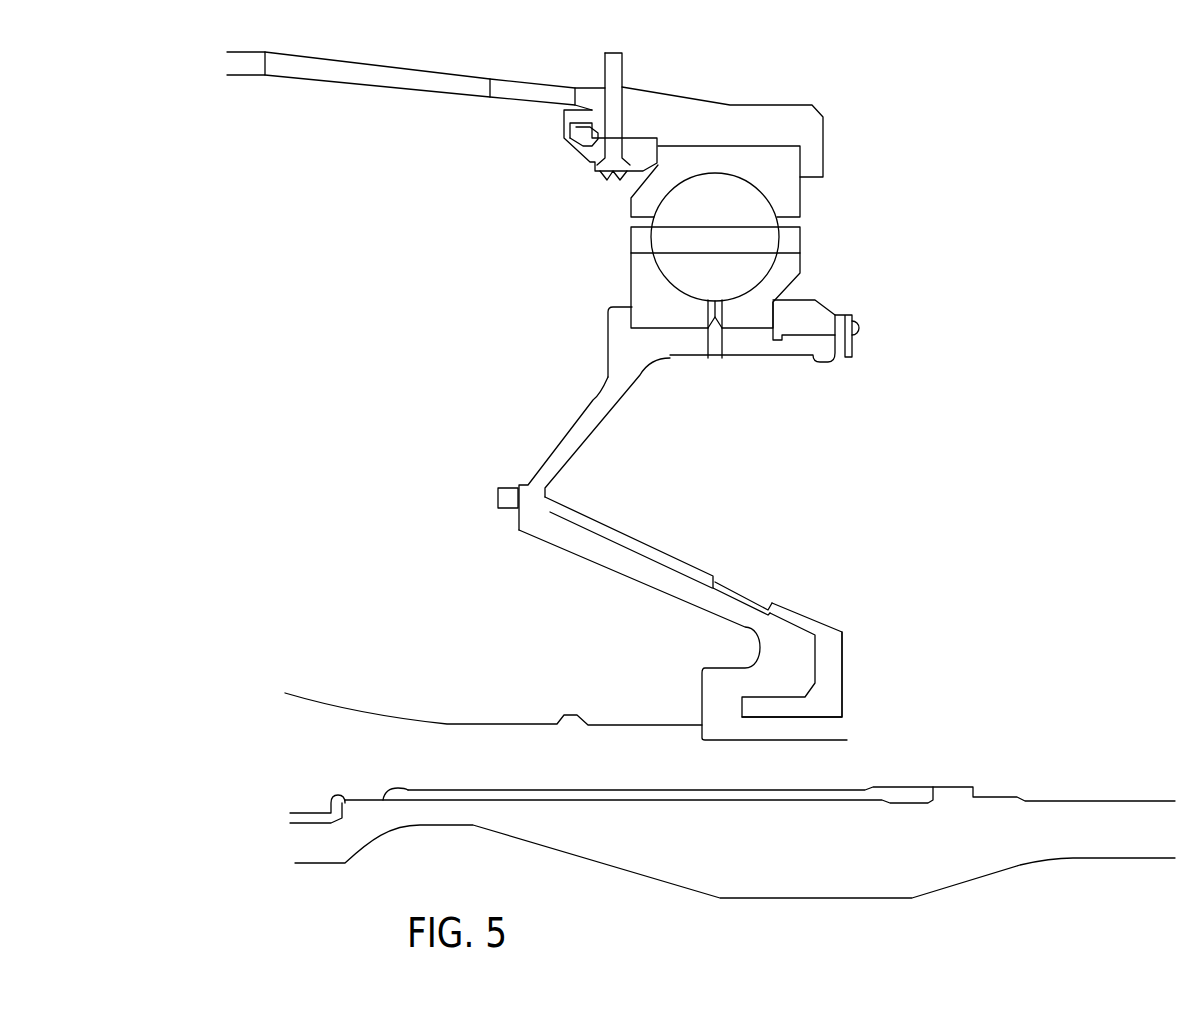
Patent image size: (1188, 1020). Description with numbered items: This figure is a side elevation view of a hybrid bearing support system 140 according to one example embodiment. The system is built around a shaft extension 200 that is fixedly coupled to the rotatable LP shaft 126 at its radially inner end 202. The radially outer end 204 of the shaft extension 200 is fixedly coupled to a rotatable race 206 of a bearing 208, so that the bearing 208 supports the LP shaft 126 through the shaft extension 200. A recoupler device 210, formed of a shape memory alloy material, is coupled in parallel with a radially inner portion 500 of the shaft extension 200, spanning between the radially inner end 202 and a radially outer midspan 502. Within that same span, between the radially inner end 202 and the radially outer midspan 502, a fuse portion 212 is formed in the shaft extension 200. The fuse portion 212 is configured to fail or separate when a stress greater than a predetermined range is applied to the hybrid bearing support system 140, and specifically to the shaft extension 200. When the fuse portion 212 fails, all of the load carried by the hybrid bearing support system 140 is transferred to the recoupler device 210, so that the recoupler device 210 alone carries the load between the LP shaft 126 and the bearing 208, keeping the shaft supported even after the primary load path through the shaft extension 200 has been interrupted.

The LP shaft 126 is at (452, 723).
The hybrid bearing support system 140 is at (468, 316).
The shaft extension 200 is at (592, 435).
The radially inner end 202 is at (838, 683).
The radially outer end 204 is at (635, 348).
The rotatable race 206 is at (798, 288).
The bearing 208 is at (584, 214).
The recoupler device 210 is at (637, 585).
The fuse portion 212 is at (740, 588).
The radially inner portion 500 is at (670, 553).
The radially outer midspan 502 is at (537, 480).